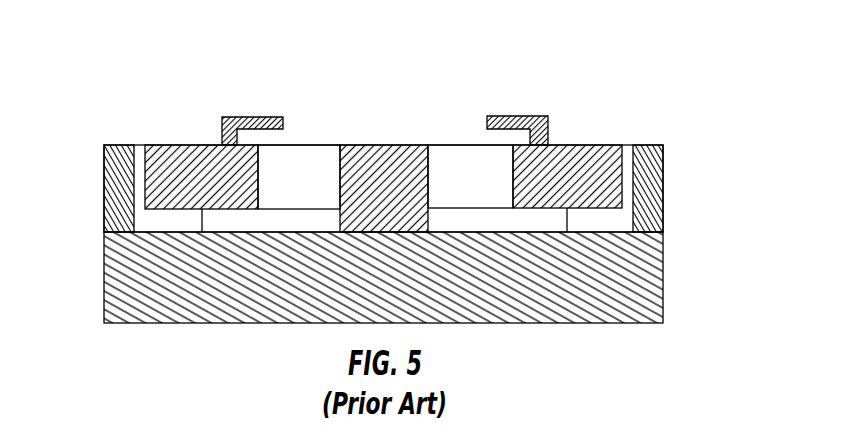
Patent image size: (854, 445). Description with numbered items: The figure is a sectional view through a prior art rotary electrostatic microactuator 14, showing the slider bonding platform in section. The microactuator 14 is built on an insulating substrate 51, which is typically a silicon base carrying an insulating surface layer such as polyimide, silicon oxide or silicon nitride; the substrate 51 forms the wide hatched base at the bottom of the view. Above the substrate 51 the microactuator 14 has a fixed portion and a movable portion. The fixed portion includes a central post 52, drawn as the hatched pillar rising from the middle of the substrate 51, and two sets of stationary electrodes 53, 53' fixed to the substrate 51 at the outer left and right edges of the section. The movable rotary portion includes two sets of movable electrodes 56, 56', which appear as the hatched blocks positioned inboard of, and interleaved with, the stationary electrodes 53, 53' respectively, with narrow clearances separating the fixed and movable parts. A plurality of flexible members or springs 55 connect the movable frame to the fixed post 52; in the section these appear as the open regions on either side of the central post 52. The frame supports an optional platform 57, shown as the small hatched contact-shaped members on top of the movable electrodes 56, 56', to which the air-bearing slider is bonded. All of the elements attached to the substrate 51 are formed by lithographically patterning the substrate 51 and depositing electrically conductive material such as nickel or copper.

The rotary electrostatic microactuator 14 is at (670, 250).
The insulating substrate 51 is at (655, 297).
The central post 52 is at (380, 144).
The stationary electrodes 53 is at (102, 188).
The stationary electrodes 53' is at (676, 188).
The flexible members or springs 55 is at (292, 155).
The movable electrodes 56 is at (186, 160).
The movable electrodes 56' is at (588, 159).
The platform 57 is at (241, 116).